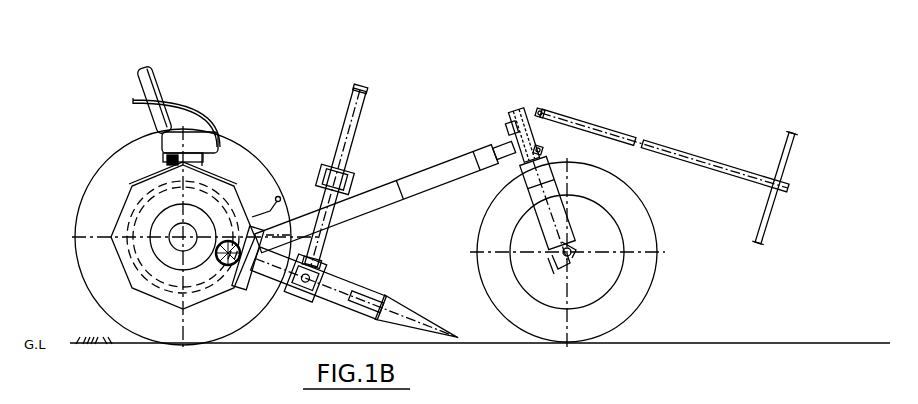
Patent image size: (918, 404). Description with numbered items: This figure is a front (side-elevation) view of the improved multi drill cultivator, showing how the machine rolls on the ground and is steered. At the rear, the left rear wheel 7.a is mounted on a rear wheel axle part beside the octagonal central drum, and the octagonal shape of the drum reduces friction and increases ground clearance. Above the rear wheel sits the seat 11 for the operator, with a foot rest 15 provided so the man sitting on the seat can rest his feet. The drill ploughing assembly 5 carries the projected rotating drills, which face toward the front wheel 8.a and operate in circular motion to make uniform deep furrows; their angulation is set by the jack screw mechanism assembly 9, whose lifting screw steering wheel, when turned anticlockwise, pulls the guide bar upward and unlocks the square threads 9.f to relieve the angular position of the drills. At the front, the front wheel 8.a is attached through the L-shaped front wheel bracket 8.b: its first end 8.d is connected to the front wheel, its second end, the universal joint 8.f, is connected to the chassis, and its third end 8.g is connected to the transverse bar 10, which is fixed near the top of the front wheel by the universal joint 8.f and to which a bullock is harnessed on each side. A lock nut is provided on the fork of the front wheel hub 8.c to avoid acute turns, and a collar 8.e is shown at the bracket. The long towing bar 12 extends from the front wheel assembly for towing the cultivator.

The drill ploughing assembly 5 is at (357, 287).
The left rear wheel 7.a is at (169, 223).
The front wheel 8.a is at (609, 253).
The front wheel bracket 8.b is at (611, 210).
The front wheel hub 8.c is at (542, 87).
The first end of front wheel bracket 8.d is at (648, 298).
The clamp collar 8.e is at (471, 104).
The universal joint 8.f is at (607, 67).
The third end of front wheel bracket 8.g is at (606, 104).
The jack screw mechanism assembly 9 is at (389, 154).
The square threads 9.f is at (386, 181).
The transverse bar 10 is at (664, 143).
The seat 11 is at (195, 100).
The long towing bar 12 is at (794, 193).
The foot rest 15 is at (281, 162).